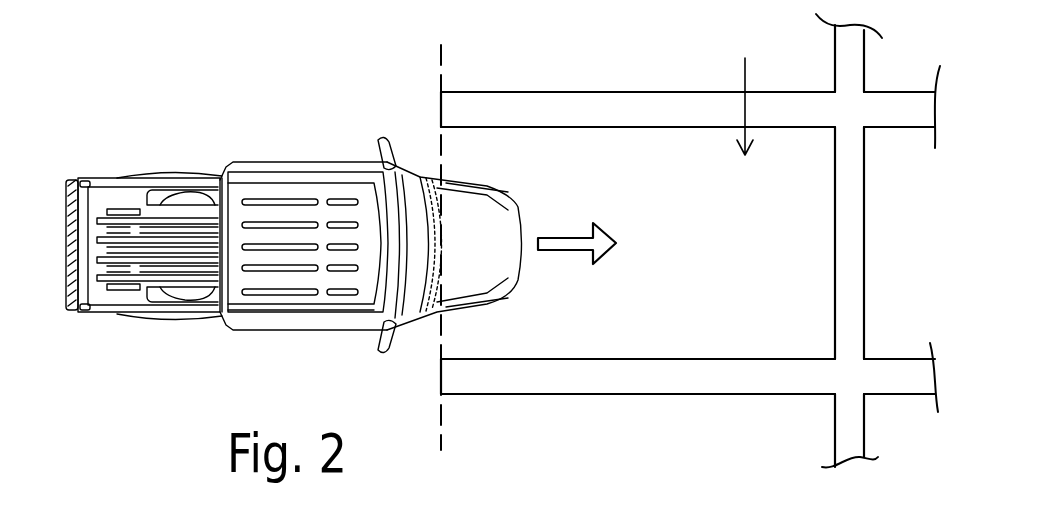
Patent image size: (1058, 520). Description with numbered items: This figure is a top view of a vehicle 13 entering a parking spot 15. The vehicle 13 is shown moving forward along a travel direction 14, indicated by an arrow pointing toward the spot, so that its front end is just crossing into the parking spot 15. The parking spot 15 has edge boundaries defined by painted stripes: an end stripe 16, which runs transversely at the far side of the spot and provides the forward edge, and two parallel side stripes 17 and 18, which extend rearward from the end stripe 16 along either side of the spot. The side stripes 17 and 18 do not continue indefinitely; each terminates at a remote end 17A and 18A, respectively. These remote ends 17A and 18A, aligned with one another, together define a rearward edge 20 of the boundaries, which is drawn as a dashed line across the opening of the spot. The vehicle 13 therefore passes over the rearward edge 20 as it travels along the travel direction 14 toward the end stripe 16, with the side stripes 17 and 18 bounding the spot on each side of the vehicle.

The vehicle 13 is at (279, 166).
The travel direction 14 is at (572, 251).
The parking spot 15 is at (745, 93).
The end stripe 16 is at (853, 267).
The side stripe 17 is at (610, 103).
The remote end 17A is at (442, 110).
The side stripe 18 is at (648, 380).
The remote end 18A is at (441, 378).
The rearward edge 20 is at (440, 150).